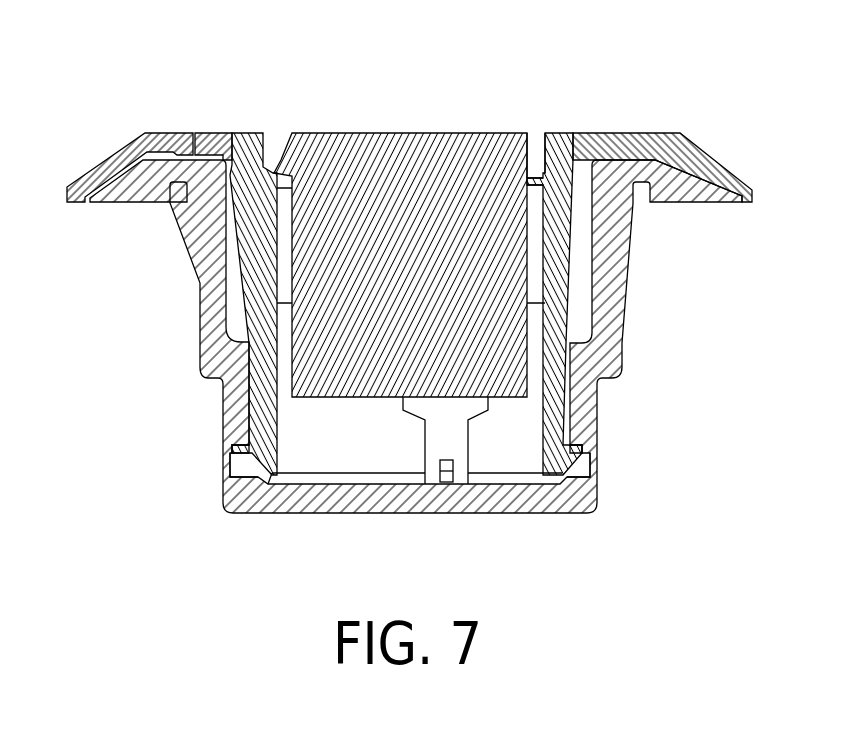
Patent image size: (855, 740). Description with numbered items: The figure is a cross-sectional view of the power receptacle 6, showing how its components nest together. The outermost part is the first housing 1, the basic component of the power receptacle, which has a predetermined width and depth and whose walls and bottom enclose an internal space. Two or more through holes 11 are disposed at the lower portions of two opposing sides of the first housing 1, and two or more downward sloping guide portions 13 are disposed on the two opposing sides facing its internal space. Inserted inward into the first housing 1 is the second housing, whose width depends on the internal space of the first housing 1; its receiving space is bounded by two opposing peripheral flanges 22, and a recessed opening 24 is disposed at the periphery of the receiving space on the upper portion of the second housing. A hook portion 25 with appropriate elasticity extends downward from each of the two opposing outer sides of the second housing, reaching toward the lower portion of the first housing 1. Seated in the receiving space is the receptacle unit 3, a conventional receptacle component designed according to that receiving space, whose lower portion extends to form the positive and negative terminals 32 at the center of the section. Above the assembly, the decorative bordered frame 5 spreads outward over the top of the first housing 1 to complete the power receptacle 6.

The first housing 1 is at (612, 338).
The receptacle unit 3 is at (453, 147).
The decorative bordered frame 5 is at (710, 163).
The power receptacle 6 is at (800, 384).
The through hole 11 is at (232, 463).
The downward sloping guide portion 13 is at (574, 272).
The peripheral flange 22 is at (537, 192).
The recessed opening 24 is at (542, 145).
The hook portion 25 is at (233, 450).
The positive and negative terminals 32 is at (430, 448).